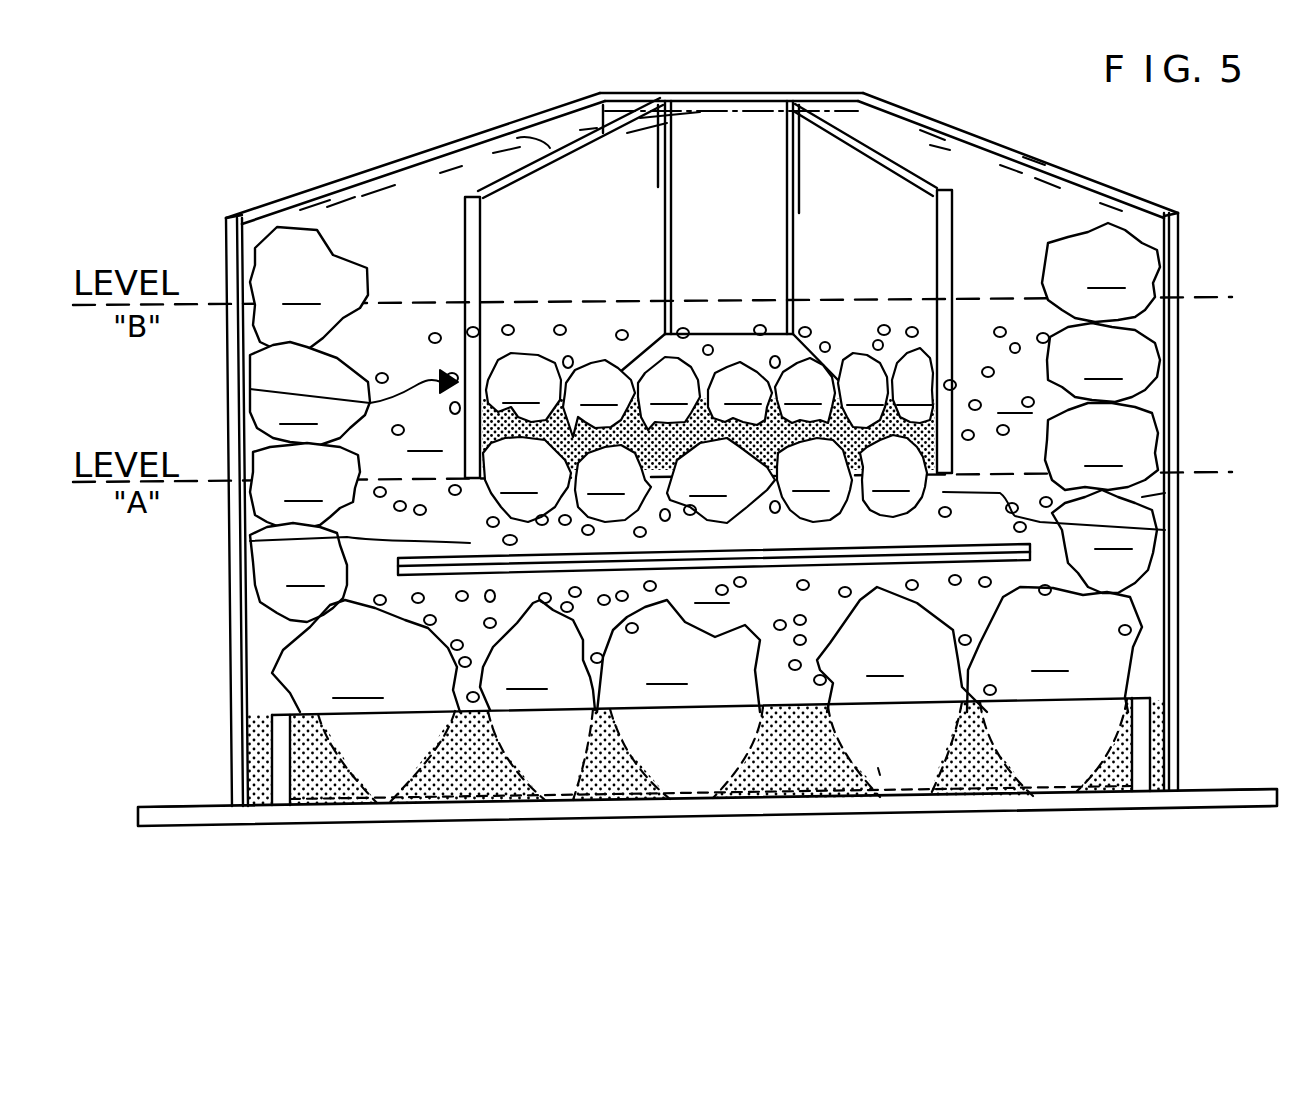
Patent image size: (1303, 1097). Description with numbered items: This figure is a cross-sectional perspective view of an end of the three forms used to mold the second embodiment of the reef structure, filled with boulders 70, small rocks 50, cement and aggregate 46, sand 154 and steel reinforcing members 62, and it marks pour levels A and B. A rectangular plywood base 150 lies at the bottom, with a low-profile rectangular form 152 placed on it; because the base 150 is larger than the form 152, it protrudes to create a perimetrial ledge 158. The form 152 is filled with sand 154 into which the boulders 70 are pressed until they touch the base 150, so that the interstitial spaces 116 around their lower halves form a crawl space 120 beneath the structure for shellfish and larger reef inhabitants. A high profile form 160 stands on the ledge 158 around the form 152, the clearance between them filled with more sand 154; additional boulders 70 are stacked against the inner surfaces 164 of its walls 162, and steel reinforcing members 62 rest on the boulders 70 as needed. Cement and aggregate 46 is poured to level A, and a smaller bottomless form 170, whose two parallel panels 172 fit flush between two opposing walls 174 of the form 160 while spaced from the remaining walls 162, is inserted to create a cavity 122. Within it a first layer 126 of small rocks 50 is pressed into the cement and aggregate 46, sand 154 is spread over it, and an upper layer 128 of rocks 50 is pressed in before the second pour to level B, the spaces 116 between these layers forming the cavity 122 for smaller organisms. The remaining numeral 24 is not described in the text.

The conveyor belt 24 is at (250, 541).
The cement and aggregate 46 is at (752, 513).
The small rocks 50 is at (717, 434).
The steel reinforcing members 62 is at (1160, 577).
The boulders 70 is at (705, 467).
The interstitial spaces 116 is at (1165, 493).
The crawl space 120 is at (880, 775).
The cavity 122 is at (688, 420).
The first layer 126 is at (1165, 530).
The upper layer 128 is at (250, 389).
The plywood base 150 is at (1110, 795).
The low-profile rectangular form 152 is at (290, 806).
The sand 154 is at (545, 415).
The perimetrial ledge 158 is at (190, 805).
The high profile form 160 is at (240, 636).
The walls 162 is at (308, 193).
The inner surfaces 164 is at (352, 225).
The bottomless form 170 is at (527, 135).
The parallel panels 172 is at (490, 185).
The opposing walls 174 is at (770, 110).